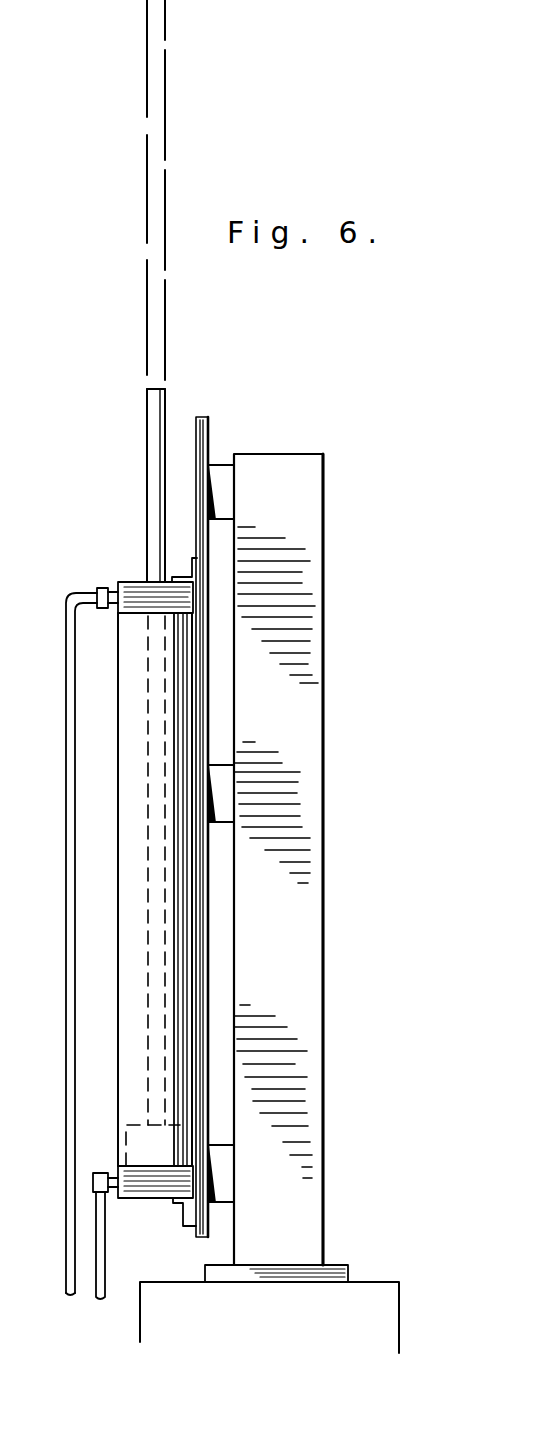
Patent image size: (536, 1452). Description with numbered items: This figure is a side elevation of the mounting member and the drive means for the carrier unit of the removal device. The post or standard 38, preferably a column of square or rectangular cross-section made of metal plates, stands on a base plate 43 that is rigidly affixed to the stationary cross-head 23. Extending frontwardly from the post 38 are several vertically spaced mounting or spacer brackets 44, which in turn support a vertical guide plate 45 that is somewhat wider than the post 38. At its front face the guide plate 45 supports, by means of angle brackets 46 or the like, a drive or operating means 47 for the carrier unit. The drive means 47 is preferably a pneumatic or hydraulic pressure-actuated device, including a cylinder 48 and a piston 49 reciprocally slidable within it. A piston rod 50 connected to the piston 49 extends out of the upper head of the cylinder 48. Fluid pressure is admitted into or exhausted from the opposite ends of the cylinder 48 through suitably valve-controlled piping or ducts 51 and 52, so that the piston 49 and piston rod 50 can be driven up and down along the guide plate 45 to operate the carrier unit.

The stationary cross-head 23 is at (393, 1297).
The post 38 is at (303, 682).
The base plate 43 is at (346, 1268).
The mounting brackets 44 is at (217, 467).
The guide plate 45 is at (206, 416).
The angle brackets 46 is at (190, 560).
The drive means 47 is at (110, 833).
The cylinder 48 is at (128, 710).
The piston 49 is at (124, 1136).
The piston rod 50 is at (152, 453).
The piping 51 is at (68, 781).
The piping 52 is at (105, 1262).